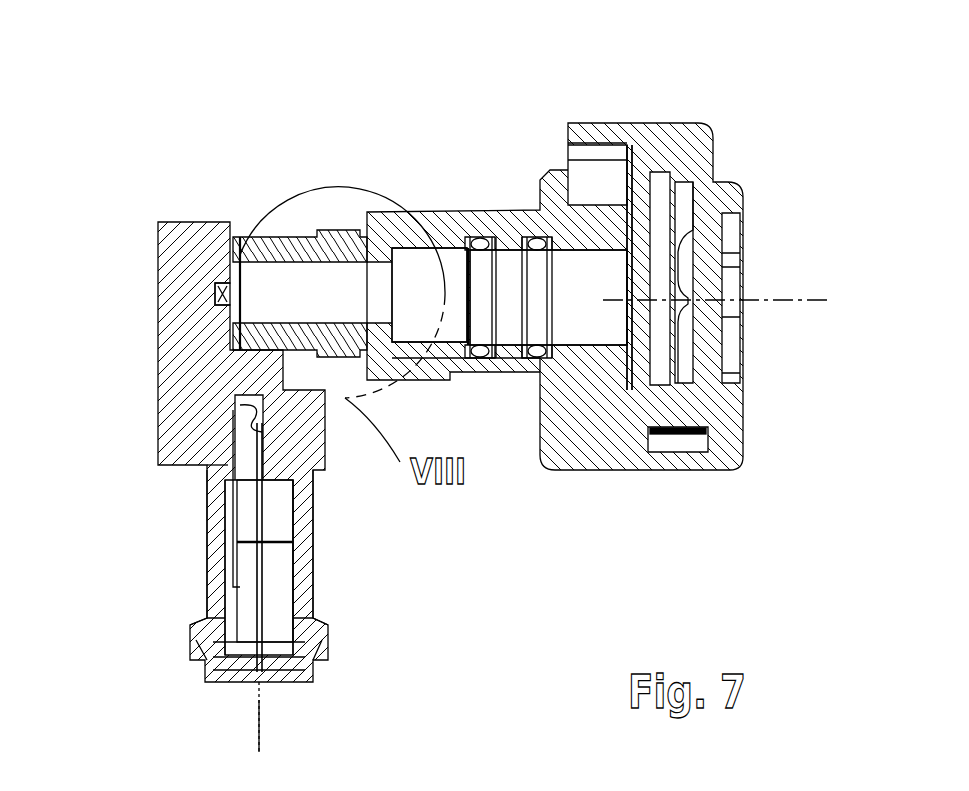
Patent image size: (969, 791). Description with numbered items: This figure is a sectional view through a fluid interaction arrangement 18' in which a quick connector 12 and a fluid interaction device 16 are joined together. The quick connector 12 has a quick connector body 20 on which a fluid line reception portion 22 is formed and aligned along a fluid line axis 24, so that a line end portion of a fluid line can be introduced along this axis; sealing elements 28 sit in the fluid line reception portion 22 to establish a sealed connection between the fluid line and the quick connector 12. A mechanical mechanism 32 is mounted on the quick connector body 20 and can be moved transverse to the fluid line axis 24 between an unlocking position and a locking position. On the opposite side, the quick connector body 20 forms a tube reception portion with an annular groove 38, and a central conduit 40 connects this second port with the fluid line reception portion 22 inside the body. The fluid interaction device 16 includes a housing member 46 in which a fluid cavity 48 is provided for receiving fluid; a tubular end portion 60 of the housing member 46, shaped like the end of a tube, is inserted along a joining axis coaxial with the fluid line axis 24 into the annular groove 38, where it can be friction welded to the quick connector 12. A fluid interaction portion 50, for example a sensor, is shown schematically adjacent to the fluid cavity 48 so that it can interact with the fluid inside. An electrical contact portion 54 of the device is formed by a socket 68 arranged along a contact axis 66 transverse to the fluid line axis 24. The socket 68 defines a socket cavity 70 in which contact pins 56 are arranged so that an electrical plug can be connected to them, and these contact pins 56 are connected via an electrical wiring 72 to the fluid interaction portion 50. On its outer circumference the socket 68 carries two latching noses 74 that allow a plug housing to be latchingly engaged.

The quick connector 12 is at (532, 133).
The fluid interaction device 16 is at (160, 128).
The fluid interaction arrangement 18' is at (740, 199).
The quick connector body 20 is at (597, 395).
The fluid line reception portion 22 is at (592, 311).
The fluid line axis 24 is at (783, 296).
The sealing elements 28 is at (482, 360).
The mechanical mechanism 32 is at (633, 122).
The annular groove 38 is at (347, 205).
The central conduit 40 is at (416, 268).
The housing member 46 is at (158, 327).
The fluid cavity 48 is at (237, 232).
The fluid interaction portion 50 is at (215, 296).
The electrical contact portion 54 is at (196, 545).
The contact pins 56 is at (297, 550).
The tubular end portion 60 is at (346, 375).
The contact axis 66 is at (260, 730).
The socket 68 is at (207, 587).
The socket cavity 70 is at (282, 593).
The electrical wiring 72 is at (235, 433).
The latching noses 74 is at (193, 627).